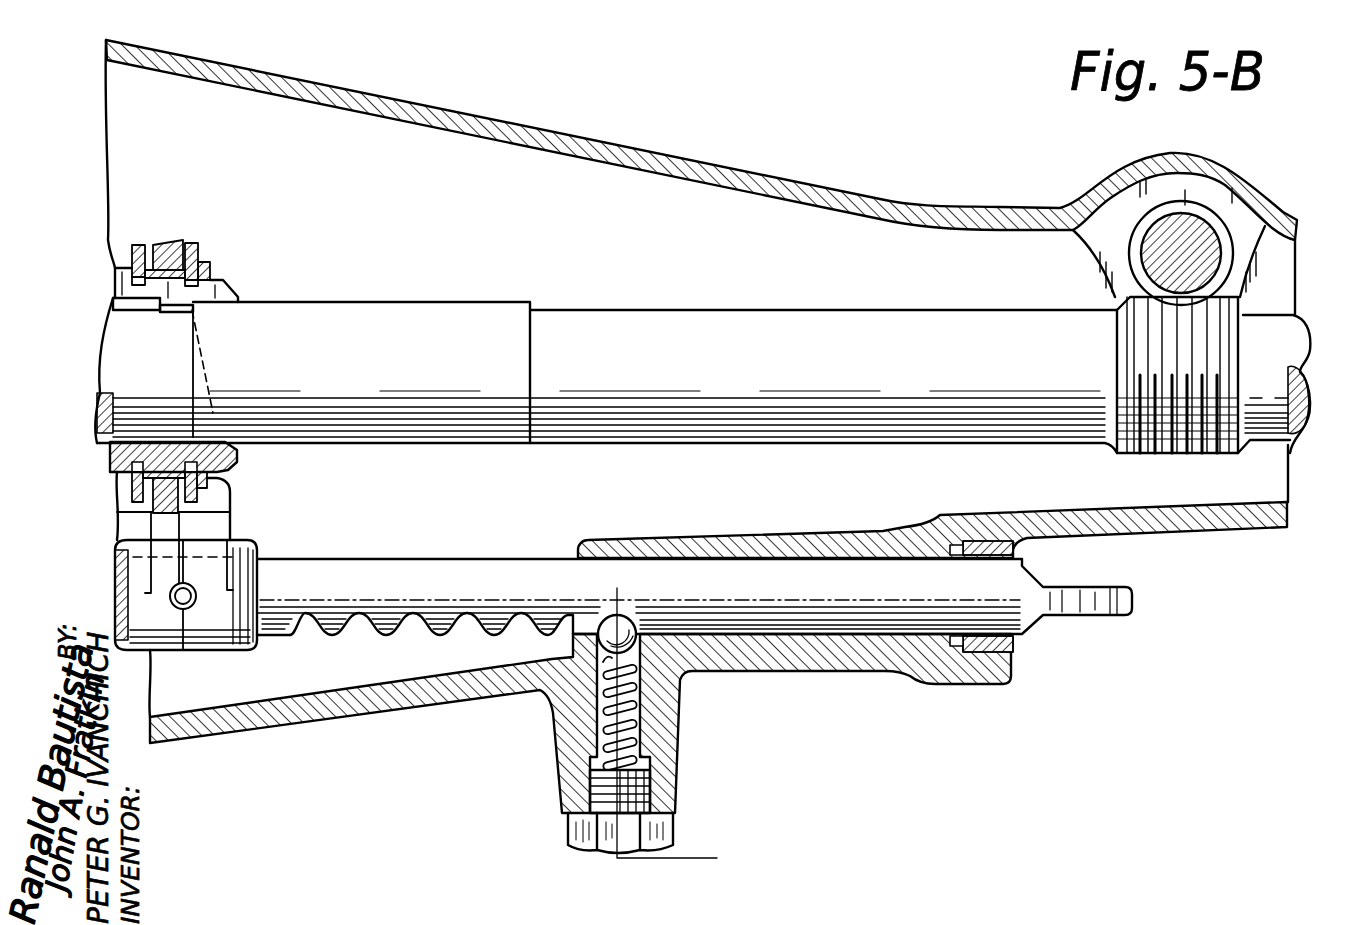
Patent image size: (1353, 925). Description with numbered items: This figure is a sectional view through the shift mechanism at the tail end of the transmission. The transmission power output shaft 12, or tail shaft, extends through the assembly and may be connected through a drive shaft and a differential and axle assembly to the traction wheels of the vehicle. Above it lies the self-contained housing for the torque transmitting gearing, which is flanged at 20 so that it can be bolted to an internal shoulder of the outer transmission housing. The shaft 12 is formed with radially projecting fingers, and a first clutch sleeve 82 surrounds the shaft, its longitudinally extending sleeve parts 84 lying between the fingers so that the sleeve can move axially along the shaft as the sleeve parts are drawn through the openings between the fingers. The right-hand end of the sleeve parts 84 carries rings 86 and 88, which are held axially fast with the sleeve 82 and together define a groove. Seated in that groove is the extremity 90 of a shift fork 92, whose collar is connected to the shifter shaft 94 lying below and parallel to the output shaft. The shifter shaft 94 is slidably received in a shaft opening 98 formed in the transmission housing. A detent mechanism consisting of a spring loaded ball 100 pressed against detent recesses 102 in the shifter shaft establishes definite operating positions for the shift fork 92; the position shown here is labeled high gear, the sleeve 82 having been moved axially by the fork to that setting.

The transmission power output shaft 12 is at (712, 310).
The flange 20 is at (384, 95).
The first clutch sleeve 82 is at (115, 454).
The sleeve parts 84 is at (104, 292).
The ring 86 is at (140, 245).
The ring 88 is at (192, 243).
The extremity of the shift fork 90 is at (150, 505).
The shift fork 92 is at (225, 648).
The shifter shaft 94 is at (743, 573).
The shaft opening 98 is at (832, 555).
The spring loaded ball 100 is at (617, 615).
The detent recesses 102 is at (510, 632).